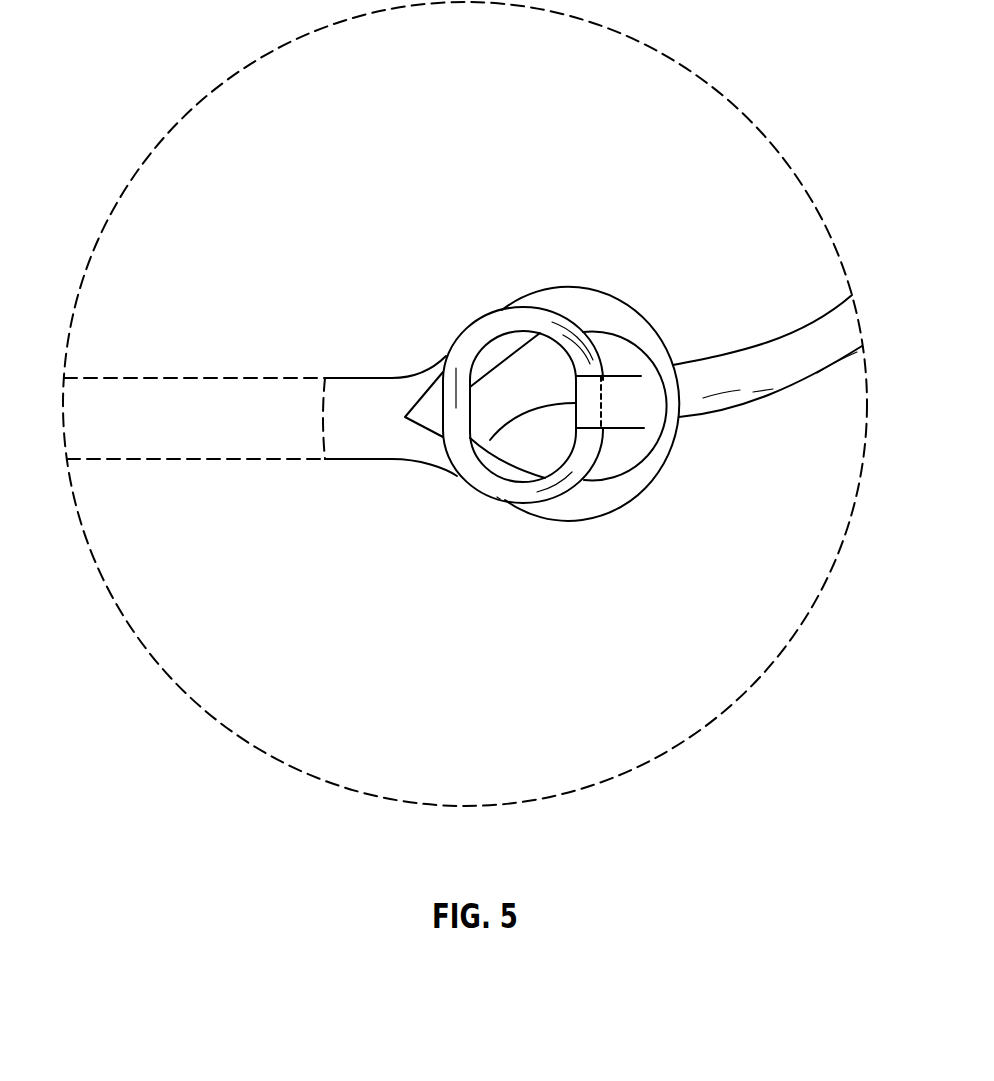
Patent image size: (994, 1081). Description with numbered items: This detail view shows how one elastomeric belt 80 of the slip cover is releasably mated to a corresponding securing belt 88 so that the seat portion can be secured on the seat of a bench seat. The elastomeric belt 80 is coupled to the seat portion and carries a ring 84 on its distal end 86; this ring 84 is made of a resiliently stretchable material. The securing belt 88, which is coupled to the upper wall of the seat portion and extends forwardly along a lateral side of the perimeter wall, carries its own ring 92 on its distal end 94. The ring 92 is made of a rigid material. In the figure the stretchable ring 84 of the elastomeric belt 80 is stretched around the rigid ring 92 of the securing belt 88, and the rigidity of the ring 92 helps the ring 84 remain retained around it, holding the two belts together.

The elastomeric belt 80 is at (123, 377).
The ring 84 is at (615, 299).
The distal end 86 is at (330, 422).
The securing belt 88 is at (798, 370).
The ring 92 is at (497, 502).
The distal end 94 is at (490, 440).